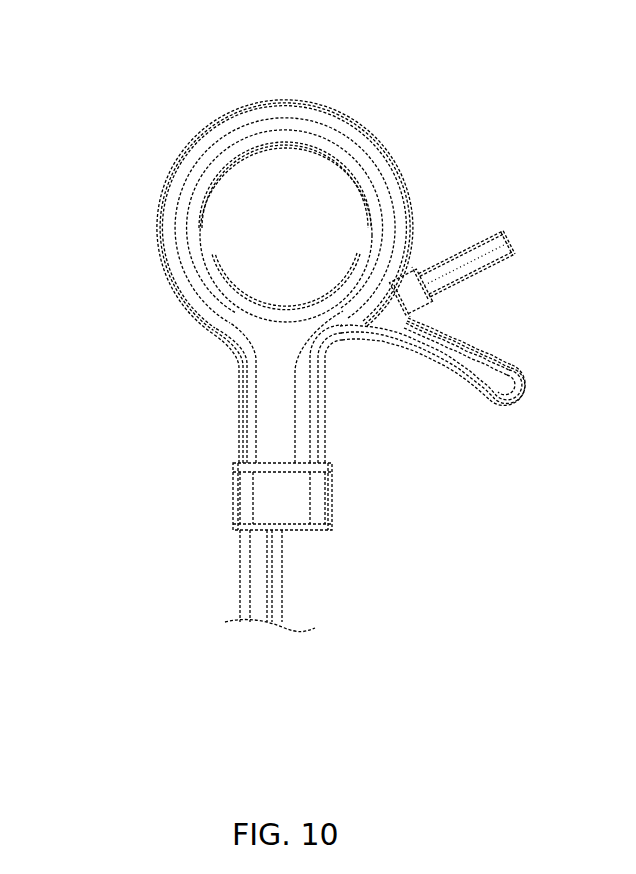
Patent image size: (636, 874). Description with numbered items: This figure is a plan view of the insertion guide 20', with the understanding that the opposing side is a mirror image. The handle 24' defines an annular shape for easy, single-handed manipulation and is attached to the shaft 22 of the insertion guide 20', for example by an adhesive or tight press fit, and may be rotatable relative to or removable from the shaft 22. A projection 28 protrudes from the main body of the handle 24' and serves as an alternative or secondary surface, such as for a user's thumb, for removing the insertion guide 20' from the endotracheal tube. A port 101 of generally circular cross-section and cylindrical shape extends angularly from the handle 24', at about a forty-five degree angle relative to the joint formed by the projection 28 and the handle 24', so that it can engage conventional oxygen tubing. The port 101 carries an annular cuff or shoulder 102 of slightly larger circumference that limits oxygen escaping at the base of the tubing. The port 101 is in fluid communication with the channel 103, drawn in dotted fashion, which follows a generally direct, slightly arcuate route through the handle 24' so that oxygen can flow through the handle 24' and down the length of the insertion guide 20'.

The insertion guide 20' is at (362, 327).
The handle 24' is at (300, 268).
The port 101 is at (503, 222).
The annular cuff or shoulder 102 is at (433, 305).
The channel 103 is at (330, 422).
The projection 28 is at (528, 393).
The shaft 22 is at (262, 573).